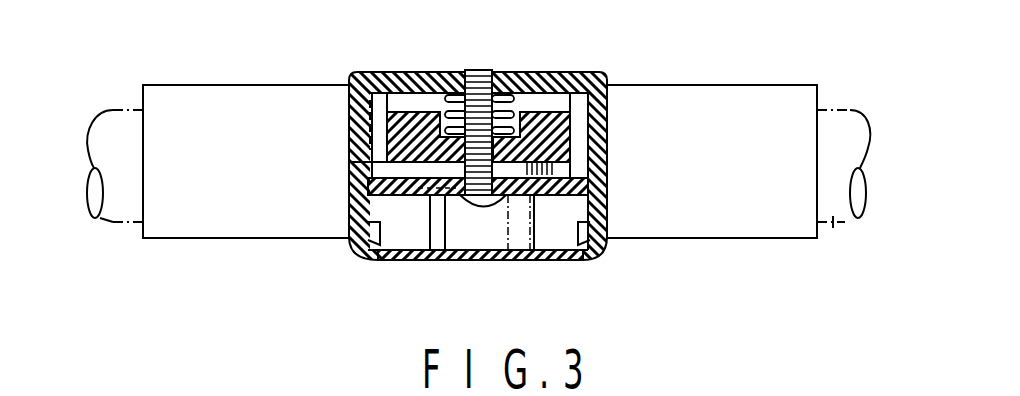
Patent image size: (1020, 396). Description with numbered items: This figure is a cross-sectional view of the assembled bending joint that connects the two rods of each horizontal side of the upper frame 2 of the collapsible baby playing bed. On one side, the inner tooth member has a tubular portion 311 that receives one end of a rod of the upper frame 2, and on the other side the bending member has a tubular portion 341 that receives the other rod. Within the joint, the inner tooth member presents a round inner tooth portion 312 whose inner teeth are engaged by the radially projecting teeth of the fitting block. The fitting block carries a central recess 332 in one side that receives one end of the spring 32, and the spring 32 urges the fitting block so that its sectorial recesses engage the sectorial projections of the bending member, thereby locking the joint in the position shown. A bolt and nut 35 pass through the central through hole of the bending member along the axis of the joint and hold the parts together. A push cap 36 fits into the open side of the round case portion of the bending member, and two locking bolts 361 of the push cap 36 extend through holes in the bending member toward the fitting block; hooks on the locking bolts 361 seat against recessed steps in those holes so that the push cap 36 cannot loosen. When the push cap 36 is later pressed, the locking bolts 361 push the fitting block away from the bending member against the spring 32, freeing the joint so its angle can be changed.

The upper frame 2 is at (127, 213).
The spring 32 is at (440, 98).
The bolt and nut 35 is at (468, 70).
The push cap 36 is at (393, 257).
The tubular portion 311 is at (695, 227).
The inner tooth portion 312 is at (577, 100).
The central recess 332 is at (520, 100).
The tubular portion 341 is at (233, 233).
The locking bolt 361 is at (428, 222).